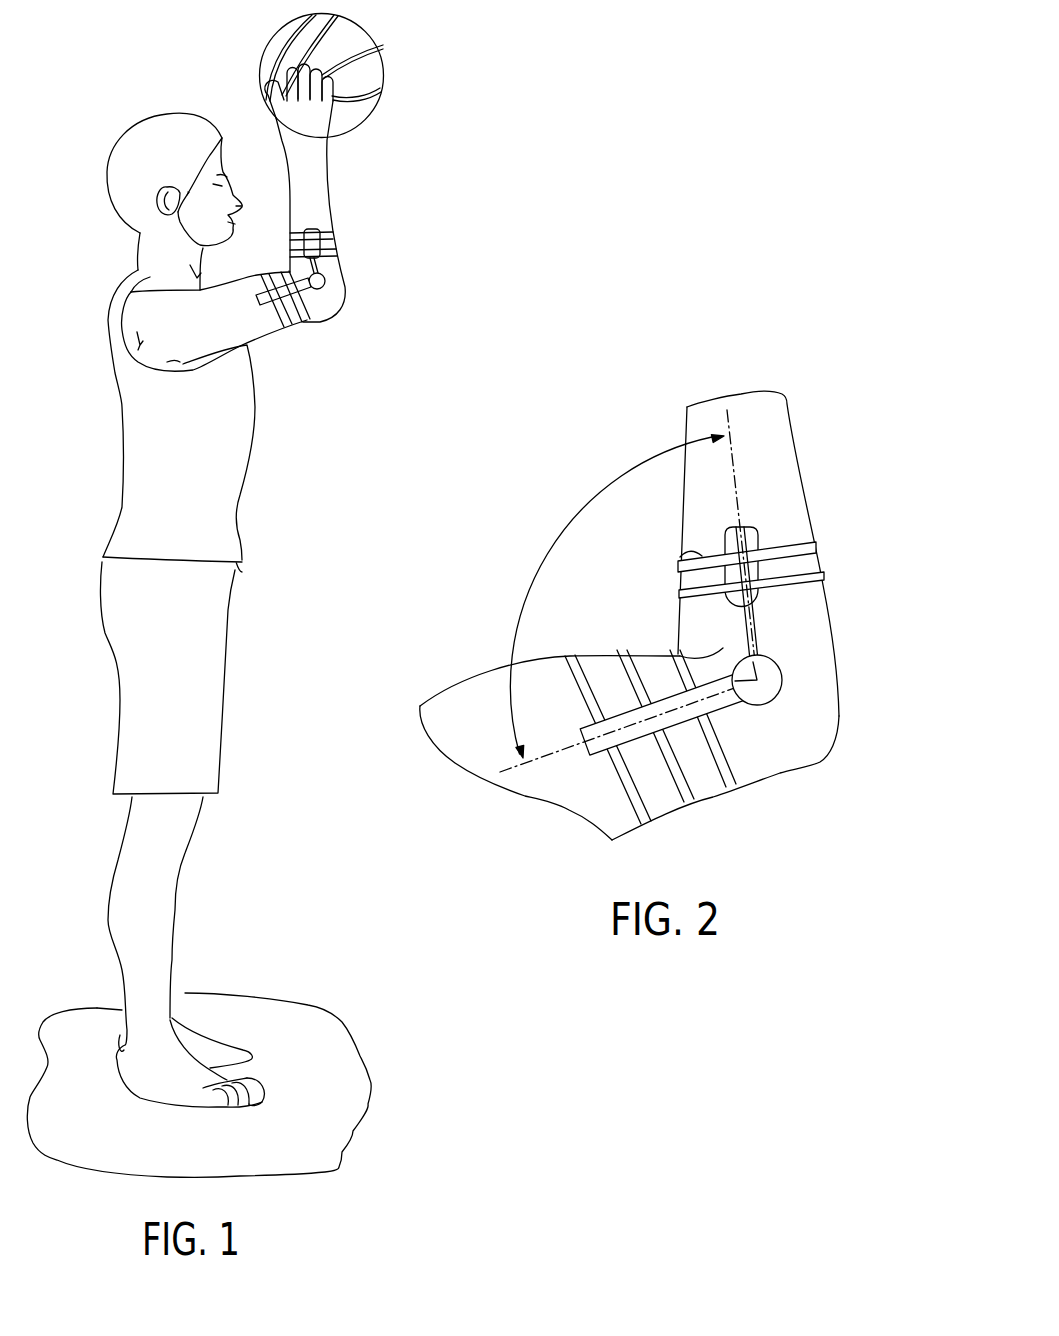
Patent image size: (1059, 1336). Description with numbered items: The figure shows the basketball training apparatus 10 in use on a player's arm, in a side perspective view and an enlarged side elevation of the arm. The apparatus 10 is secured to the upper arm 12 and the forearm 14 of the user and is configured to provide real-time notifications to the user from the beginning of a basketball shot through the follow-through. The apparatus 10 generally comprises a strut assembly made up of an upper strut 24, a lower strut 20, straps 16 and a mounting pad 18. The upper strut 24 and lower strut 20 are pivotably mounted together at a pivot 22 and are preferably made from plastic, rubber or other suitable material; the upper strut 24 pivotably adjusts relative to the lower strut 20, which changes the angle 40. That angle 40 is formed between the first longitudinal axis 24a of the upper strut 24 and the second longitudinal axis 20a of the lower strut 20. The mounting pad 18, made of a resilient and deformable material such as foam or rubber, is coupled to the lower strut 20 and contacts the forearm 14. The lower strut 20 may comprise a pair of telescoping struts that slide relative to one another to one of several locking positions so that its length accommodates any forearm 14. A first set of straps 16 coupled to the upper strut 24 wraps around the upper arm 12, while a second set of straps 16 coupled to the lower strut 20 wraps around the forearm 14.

In FIG. 1, the basketball training apparatus 10 is at (351, 283).
In FIG. 2, the basketball training apparatus 10 is at (658, 620).
In FIG. 1, the upper arm 12 is at (303, 328).
In FIG. 2, the upper arm 12 is at (708, 815).
In FIG. 1, the forearm 14 is at (355, 230).
In FIG. 2, the forearm 14 is at (838, 541).
In FIG. 2, the strap 16 is at (633, 656).
In FIG. 2, the mounting pad 18 is at (750, 530).
In FIG. 2, the lower strut 20 is at (773, 511).
In FIG. 2, the second longitudinal axis 20a is at (732, 422).
In FIG. 2, the pivot 22 is at (777, 700).
In FIG. 2, the upper strut 24 is at (628, 760).
In FIG. 2, the first longitudinal axis 24a is at (548, 758).
In FIG. 2, the angle 40 is at (578, 508).